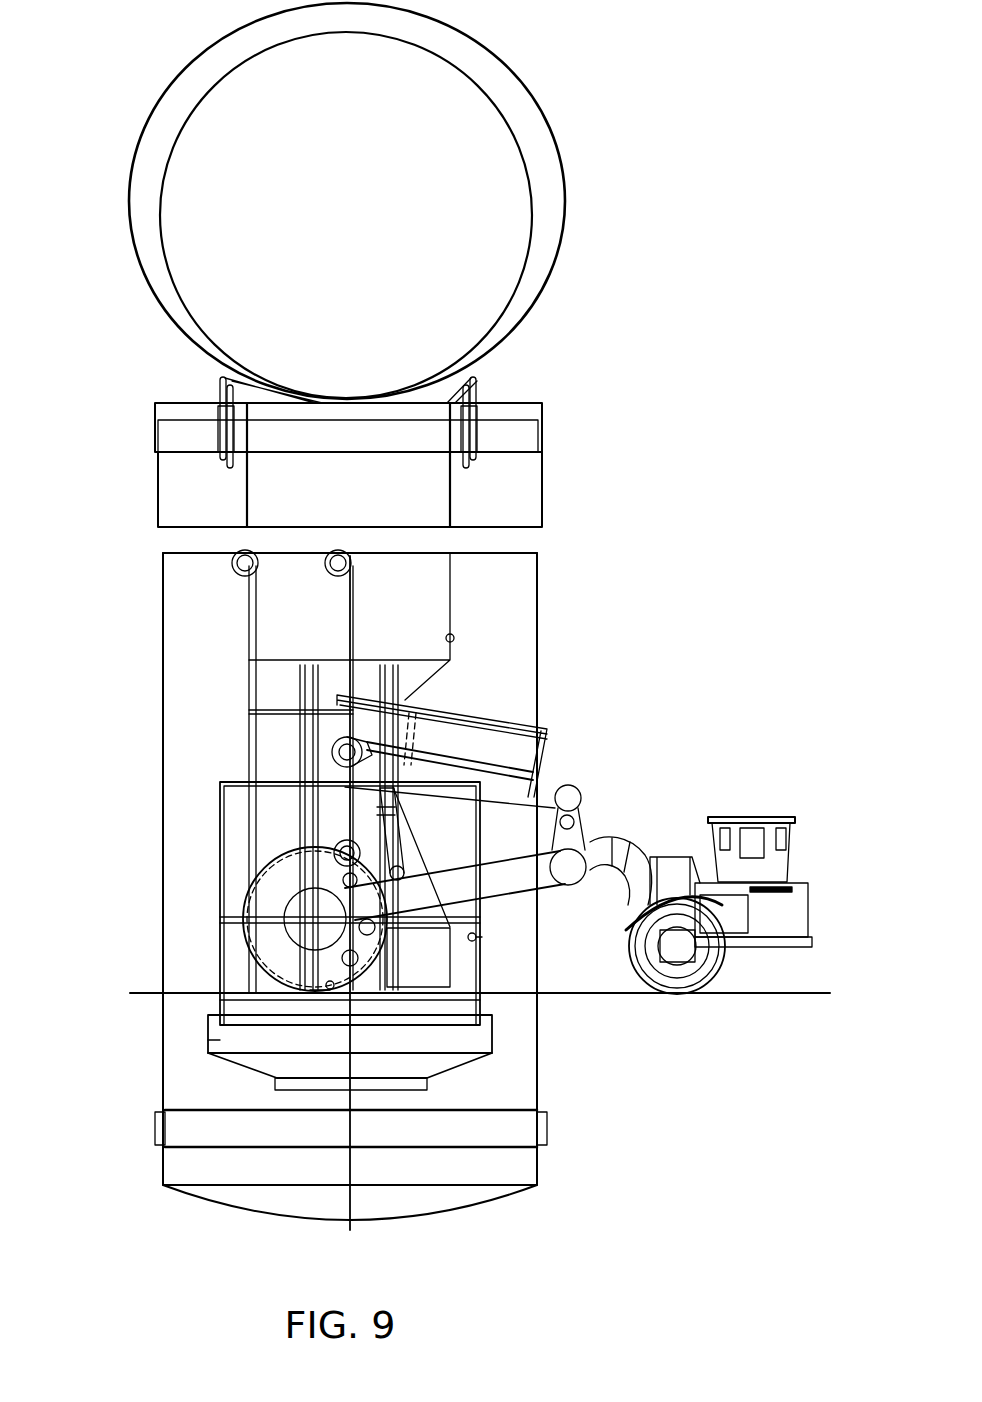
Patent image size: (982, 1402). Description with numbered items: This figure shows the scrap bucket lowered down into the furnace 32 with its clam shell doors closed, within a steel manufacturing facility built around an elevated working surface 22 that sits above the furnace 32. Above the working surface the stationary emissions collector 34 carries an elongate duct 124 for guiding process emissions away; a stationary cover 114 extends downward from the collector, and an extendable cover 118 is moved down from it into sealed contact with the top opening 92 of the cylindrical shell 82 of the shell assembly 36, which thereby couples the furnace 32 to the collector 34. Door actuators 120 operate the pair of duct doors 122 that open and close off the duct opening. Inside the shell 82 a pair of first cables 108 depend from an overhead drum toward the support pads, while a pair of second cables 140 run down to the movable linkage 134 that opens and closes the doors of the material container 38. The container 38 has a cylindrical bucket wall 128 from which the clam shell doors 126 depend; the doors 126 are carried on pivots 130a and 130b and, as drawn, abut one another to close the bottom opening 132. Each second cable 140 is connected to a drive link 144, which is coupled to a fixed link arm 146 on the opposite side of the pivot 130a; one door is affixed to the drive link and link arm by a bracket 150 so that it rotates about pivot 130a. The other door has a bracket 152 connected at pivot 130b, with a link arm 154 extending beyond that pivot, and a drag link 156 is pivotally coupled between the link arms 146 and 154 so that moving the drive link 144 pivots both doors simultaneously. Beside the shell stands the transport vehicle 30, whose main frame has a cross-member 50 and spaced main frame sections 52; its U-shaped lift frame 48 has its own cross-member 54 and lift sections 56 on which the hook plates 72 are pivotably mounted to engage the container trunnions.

The emissions collector 34 is at (148, 122).
The elongate duct 124 is at (452, 72).
The duct doors 122 is at (222, 378).
The door actuators 120 is at (216, 412).
The stationary cover 114 is at (542, 411).
The extendable cover 118 is at (158, 510).
The top opening 92 is at (540, 553).
The second cables 140 is at (258, 630).
The first cables 108 is at (355, 624).
The shell assembly 36 is at (544, 650).
The hook plates 72 is at (483, 710).
The cylindrical shell 82 is at (163, 763).
The link arm 154 is at (290, 913).
The main frame sections 52 is at (548, 790).
The main frame cross-member 50 is at (572, 797).
The transport vehicle 30 is at (617, 813).
The lift frame 48 is at (625, 852).
The material container 38 is at (255, 866).
The drag link 156 is at (412, 886).
The movable linkage 134 is at (283, 948).
The cylindrical bucket wall 128 is at (482, 937).
The lift frame cross-member 54 is at (573, 878).
The lift sections 56 is at (512, 882).
The elevated working surface 22 is at (778, 993).
The pivot 130b is at (376, 938).
The pivot 130a is at (306, 990).
The drive link 144 is at (262, 987).
The bracket 152 is at (395, 1002).
The bracket 150 is at (332, 990).
The bottom opening 132 is at (405, 1003).
The fixed link arm 146 is at (318, 992).
The clam shell doors 126 is at (228, 1055).
The furnace 32 is at (548, 1130).